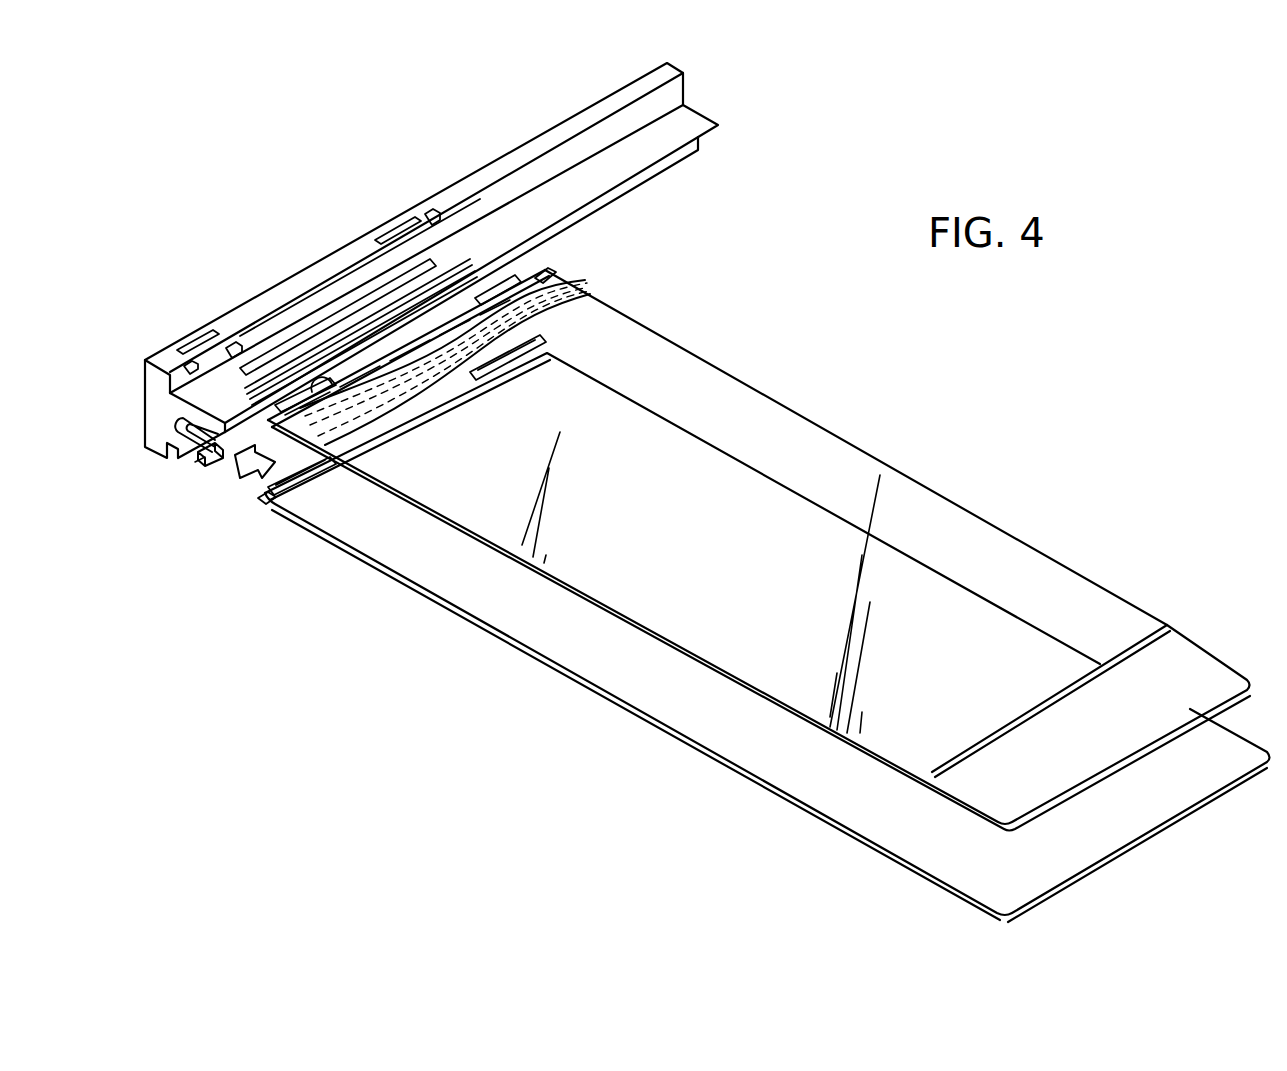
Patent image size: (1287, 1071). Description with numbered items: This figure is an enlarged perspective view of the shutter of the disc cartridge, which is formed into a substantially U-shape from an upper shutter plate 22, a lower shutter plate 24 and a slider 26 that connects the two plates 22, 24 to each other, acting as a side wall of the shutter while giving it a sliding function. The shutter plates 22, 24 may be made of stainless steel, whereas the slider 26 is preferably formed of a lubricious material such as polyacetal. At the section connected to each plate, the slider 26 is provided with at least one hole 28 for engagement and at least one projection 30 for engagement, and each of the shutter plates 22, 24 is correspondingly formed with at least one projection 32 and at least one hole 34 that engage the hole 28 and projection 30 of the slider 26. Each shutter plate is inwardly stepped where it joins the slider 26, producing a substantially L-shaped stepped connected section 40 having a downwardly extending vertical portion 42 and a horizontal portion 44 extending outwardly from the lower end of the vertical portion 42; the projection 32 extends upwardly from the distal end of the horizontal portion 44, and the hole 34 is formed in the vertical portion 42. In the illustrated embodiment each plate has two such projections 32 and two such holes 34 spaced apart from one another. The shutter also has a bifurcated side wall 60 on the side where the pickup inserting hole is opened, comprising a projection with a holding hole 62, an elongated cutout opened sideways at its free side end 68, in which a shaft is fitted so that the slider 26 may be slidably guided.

The upper shutter plate 22 is at (583, 292).
The lower shutter plate 24 is at (722, 750).
The slider 26 is at (505, 155).
The hole 28 is at (410, 216).
The projection 30 is at (430, 207).
The projection 32 is at (500, 282).
The hole 34 is at (513, 372).
The stepped connected section 40 is at (540, 272).
The vertical portion 42 is at (387, 440).
The horizontal portion 44 is at (442, 408).
The side wall 60 is at (177, 462).
The holding hole 62 is at (200, 465).
The free side end 68 is at (217, 462).